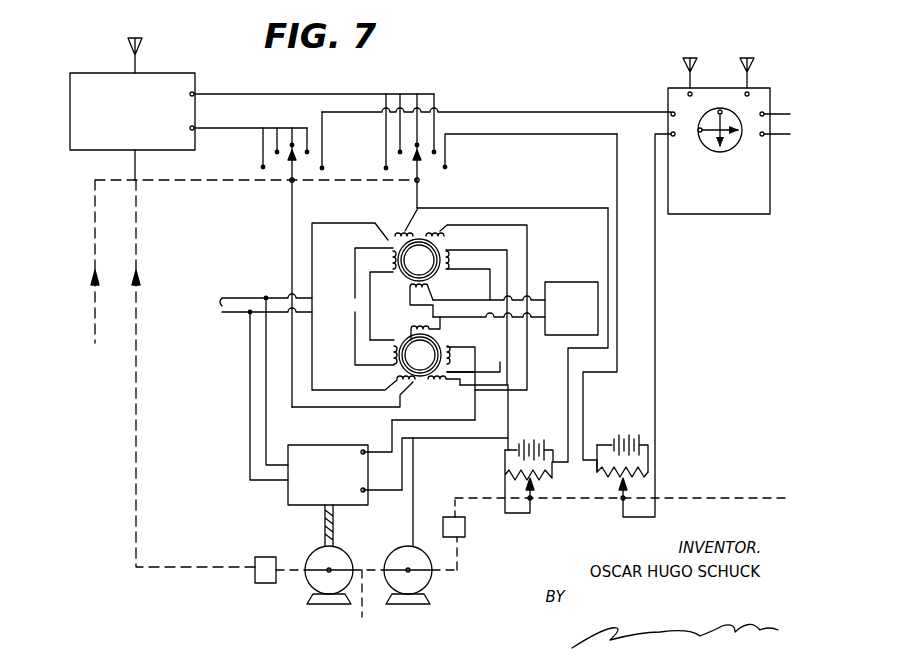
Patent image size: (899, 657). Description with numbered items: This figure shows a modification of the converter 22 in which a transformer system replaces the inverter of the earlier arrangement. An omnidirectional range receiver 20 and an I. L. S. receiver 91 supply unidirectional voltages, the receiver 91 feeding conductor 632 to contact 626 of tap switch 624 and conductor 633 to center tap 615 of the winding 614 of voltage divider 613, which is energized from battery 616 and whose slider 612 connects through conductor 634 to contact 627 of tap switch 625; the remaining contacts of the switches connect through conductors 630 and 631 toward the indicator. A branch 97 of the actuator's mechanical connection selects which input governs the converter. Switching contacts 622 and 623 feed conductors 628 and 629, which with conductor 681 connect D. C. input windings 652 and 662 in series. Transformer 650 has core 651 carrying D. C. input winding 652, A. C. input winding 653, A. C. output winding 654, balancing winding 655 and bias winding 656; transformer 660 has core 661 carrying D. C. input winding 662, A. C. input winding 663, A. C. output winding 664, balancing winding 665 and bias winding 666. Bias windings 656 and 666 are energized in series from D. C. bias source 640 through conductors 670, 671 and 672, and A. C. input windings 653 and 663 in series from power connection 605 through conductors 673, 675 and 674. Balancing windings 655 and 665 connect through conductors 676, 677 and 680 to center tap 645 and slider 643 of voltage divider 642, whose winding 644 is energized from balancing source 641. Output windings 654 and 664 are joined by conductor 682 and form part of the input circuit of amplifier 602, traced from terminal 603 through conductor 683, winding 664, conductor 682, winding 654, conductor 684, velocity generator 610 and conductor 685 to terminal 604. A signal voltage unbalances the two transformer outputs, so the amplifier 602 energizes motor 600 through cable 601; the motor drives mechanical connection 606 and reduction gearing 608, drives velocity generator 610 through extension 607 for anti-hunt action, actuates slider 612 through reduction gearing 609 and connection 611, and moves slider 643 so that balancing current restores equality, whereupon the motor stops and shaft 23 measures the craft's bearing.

The omni-directional range receiver 20 is at (160, 73).
The I. L. S. receiver 91 is at (720, 214).
The conductor 632 is at (532, 112).
The conductor 630 is at (228, 132).
The conductor 631 is at (300, 130).
The tap switch 624 is at (252, 152).
The switching contact 622 is at (290, 183).
The contact 626 is at (324, 165).
The tap switch 625 is at (440, 175).
The switching contact 623 is at (415, 175).
The contact 627 is at (448, 165).
The conductor 629 is at (420, 193).
The conductor 633 is at (657, 330).
The conductor 634 is at (618, 268).
The conductor 676 is at (606, 350).
The branch of mechanical connection 97 is at (93, 240).
The converter 22 is at (218, 425).
The mechanical connection 606 is at (215, 570).
The reduction gearing 608 is at (262, 583).
The conductor 673 is at (280, 295).
The power connection 605 is at (224, 314).
The conductor 674 is at (268, 330).
The conductor 628 is at (290, 232).
The transformer 650 is at (372, 235).
The transformer 660 is at (380, 375).
The D. C. input winding 652 is at (398, 232).
The balancing winding 655 is at (448, 226).
The A. C. input winding 653 is at (380, 258).
The A. C. output winding 654 is at (455, 265).
The conductor 684 is at (480, 256).
The bias winding 656 is at (432, 290).
The core 651 is at (404, 278).
The conductor 671 is at (408, 304).
The conductor 681 is at (314, 276).
The conductor 675 is at (368, 314).
The core 661 is at (408, 332).
The bias winding 666 is at (434, 326).
The A. C. input winding 663 is at (382, 350).
The A. C. output winding 664 is at (462, 366).
The conductor 682 is at (500, 358).
The D. C. input winding 662 is at (400, 405).
The balancing winding 665 is at (430, 390).
The conductor 677 is at (529, 262).
The conductor 670 is at (538, 296).
The conductor 672 is at (538, 320).
The D. C. bias source 640 is at (582, 282).
The conductor 680 is at (490, 420).
The conductor 683 is at (370, 453).
The amplifier 602 is at (290, 448).
The input terminal 603 is at (362, 450).
The input terminal 604 is at (363, 494).
The conductor 685 is at (378, 492).
The cable 601 is at (324, 528).
The motor 600 is at (329, 604).
The velocity generator 610 is at (406, 604).
The shaft extension 607 is at (372, 604).
The reduction gearing 609 is at (457, 540).
The mechanical connection 611 is at (445, 575).
The source of balancing D. C. 641 is at (515, 445).
The voltage divider 642 is at (480, 475).
The center tap 645 is at (537, 490).
The winding 644 is at (518, 484).
The slider 643 is at (528, 488).
The battery 616 is at (606, 440).
The winding 614 is at (652, 455).
The voltage divider 613 is at (665, 467).
The center tap 615 is at (621, 485).
The slider 612 is at (622, 500).
The shaft 23 is at (688, 498).